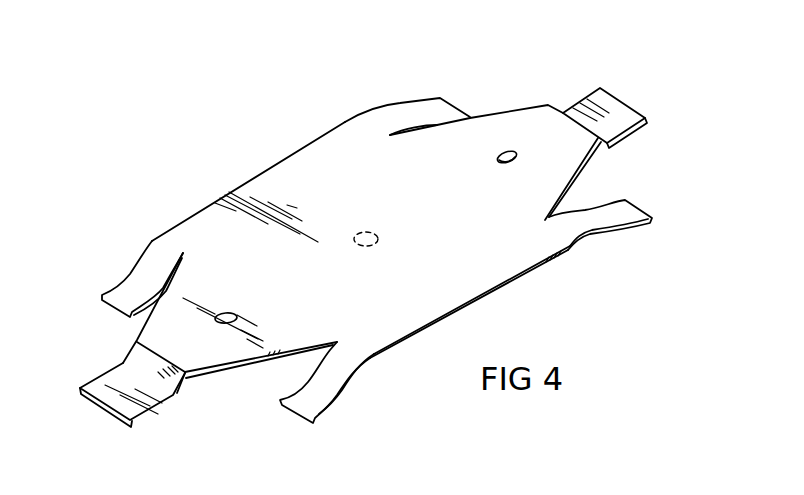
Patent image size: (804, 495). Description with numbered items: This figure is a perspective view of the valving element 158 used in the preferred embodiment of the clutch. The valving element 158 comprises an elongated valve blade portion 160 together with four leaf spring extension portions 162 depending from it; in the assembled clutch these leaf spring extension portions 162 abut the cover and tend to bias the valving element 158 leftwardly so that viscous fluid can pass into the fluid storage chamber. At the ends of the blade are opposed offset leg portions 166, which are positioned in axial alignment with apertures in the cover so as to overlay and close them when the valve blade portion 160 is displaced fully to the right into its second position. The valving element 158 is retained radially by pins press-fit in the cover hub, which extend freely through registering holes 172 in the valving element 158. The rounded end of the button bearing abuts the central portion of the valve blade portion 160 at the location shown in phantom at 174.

The valving element 158 is at (565, 279).
The valve blade portion 160 is at (227, 352).
The leaf spring extension portions 162 is at (440, 108).
The offset leg portions 166 is at (614, 112).
The registering holes 172 is at (496, 158).
The button bearing abutment location 174 is at (378, 233).